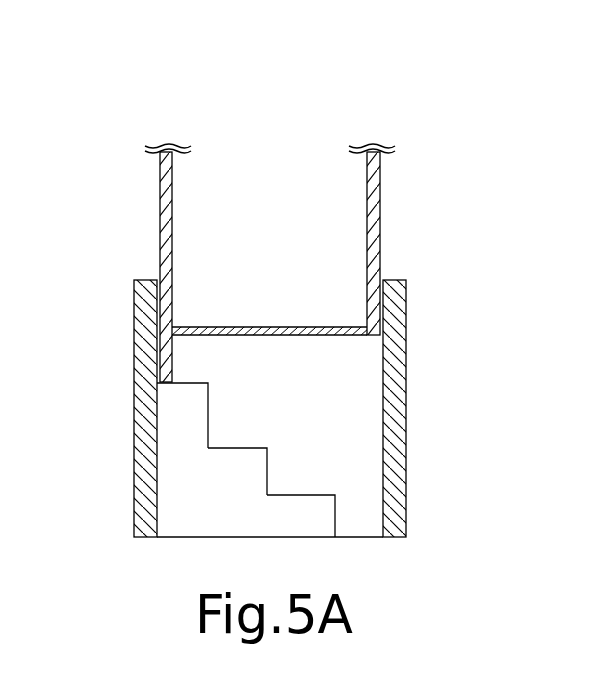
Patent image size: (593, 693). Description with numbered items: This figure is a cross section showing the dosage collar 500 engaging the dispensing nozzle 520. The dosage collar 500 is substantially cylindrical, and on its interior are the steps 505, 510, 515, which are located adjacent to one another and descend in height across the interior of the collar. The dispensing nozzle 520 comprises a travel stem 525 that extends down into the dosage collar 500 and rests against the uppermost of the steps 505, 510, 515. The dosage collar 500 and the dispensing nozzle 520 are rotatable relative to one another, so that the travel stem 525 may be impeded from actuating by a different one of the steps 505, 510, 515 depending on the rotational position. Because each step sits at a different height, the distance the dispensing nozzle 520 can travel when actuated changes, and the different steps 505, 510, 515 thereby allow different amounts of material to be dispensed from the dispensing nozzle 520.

The dosage collar 500 is at (434, 489).
The step 505 is at (126, 415).
The step 510 is at (153, 493).
The step 515 is at (385, 441).
The dispensing nozzle 520 is at (228, 207).
The travel stem 525 is at (224, 263).